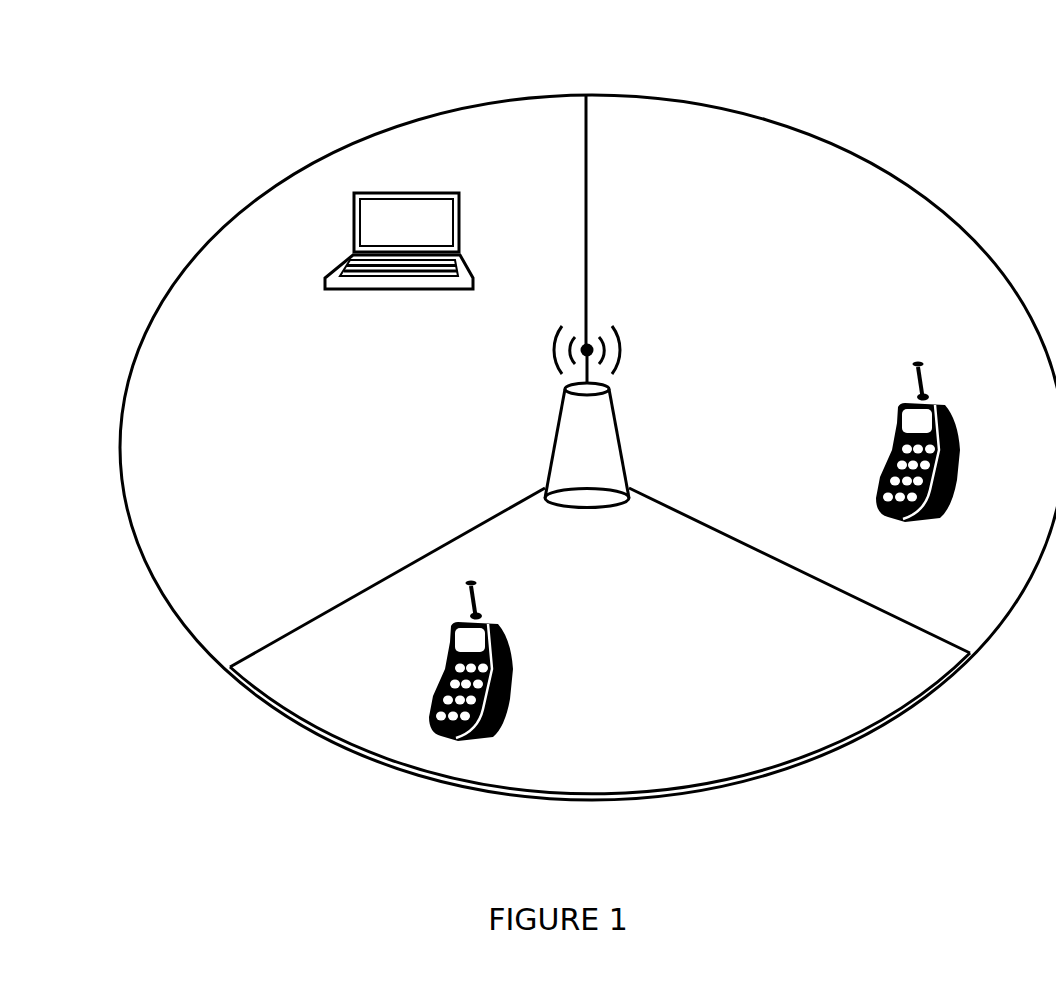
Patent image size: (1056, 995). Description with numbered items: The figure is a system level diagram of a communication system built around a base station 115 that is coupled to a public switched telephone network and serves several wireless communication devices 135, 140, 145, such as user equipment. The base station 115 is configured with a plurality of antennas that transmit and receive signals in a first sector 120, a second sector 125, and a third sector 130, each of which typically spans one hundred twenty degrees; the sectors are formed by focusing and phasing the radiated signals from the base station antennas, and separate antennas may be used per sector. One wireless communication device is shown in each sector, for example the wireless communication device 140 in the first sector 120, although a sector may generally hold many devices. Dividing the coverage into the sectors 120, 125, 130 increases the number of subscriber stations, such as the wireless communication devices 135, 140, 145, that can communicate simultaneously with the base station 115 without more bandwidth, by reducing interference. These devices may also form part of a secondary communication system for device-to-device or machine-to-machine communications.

The base station 115 is at (567, 483).
The first sector 120 is at (754, 328).
The second sector 125 is at (558, 778).
The third sector 130 is at (315, 427).
The wireless communication device 135 is at (390, 238).
The wireless communication device 140 is at (881, 437).
The wireless communication device 145 is at (428, 656).